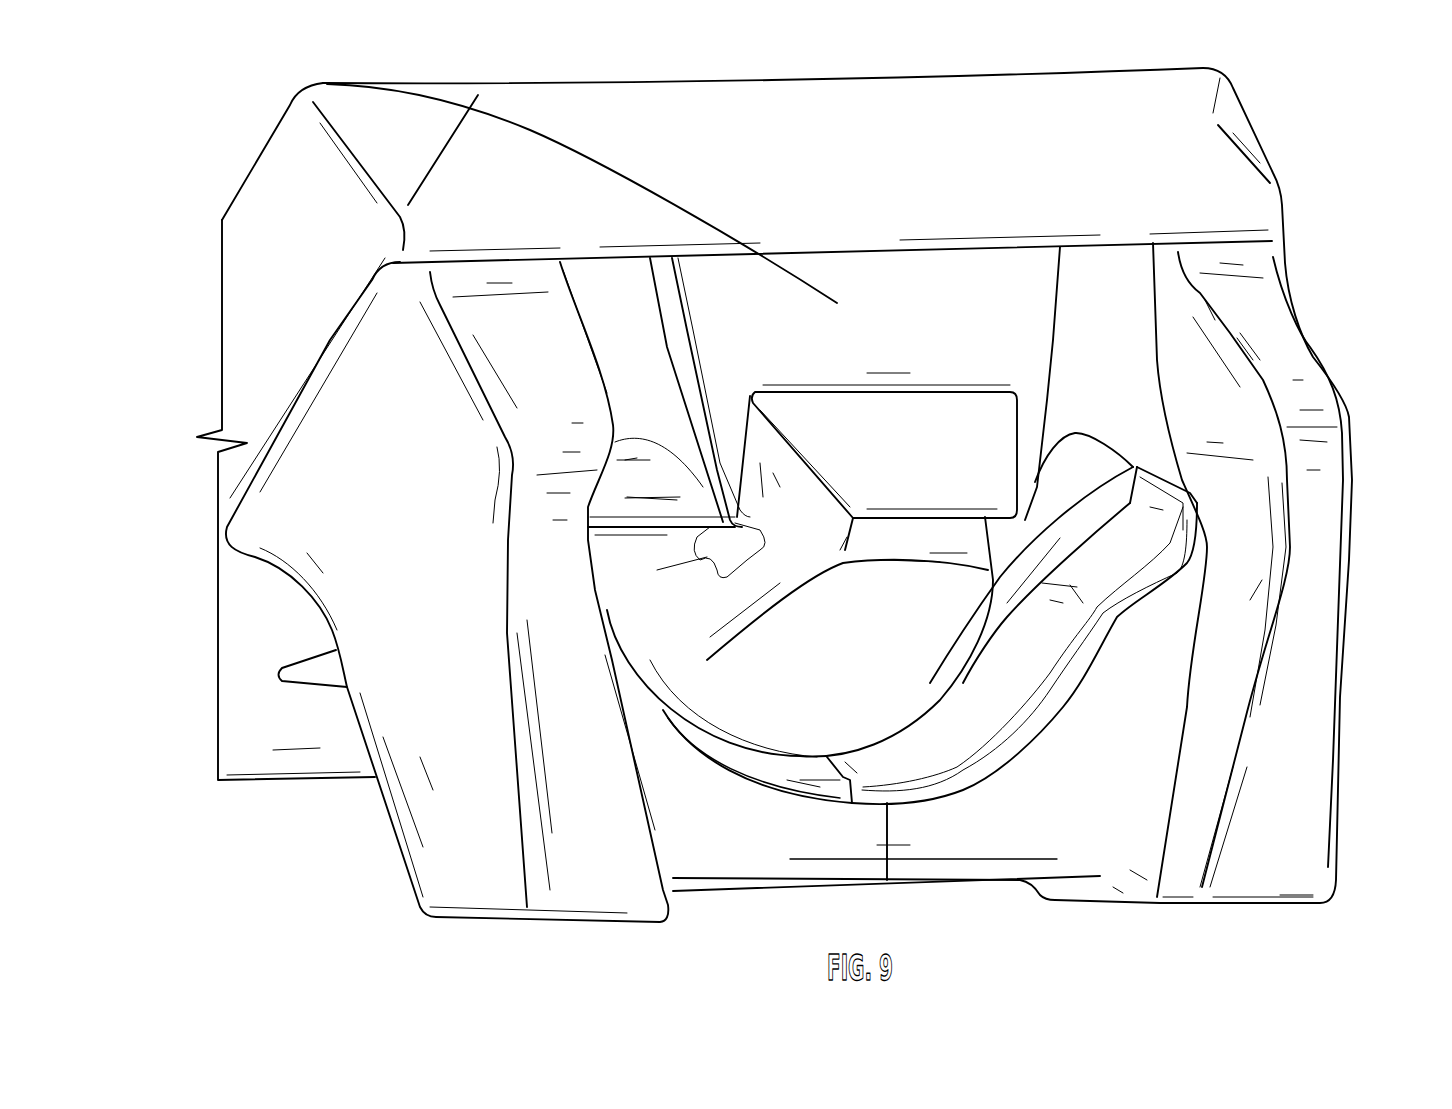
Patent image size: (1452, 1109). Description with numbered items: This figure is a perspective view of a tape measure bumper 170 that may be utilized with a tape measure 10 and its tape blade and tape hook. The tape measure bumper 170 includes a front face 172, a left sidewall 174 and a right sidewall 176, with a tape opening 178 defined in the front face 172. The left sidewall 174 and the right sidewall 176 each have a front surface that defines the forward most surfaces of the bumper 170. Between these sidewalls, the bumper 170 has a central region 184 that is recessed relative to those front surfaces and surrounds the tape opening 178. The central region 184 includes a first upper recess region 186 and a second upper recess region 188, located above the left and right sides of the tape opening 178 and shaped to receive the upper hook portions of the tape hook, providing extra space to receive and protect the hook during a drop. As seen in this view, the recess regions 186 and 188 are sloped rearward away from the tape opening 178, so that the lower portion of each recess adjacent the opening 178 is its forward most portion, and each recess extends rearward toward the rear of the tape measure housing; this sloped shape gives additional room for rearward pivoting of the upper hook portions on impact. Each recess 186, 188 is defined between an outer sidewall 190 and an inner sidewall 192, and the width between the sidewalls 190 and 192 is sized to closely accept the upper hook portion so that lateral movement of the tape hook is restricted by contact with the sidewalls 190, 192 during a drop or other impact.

The tape measure 10 is at (1207, 143).
The tape measure bumper 170 is at (1357, 272).
The front face 172 is at (480, 82).
The left sidewall 174 is at (527, 840).
The right sidewall 176 is at (1273, 753).
The tape opening 178 is at (827, 717).
The central region 184 is at (1105, 827).
The first upper recess region 186 is at (623, 297).
The second upper recess region 188 is at (1093, 323).
The outer sidewall 190 is at (603, 385).
The inner sidewall 192 is at (703, 433).